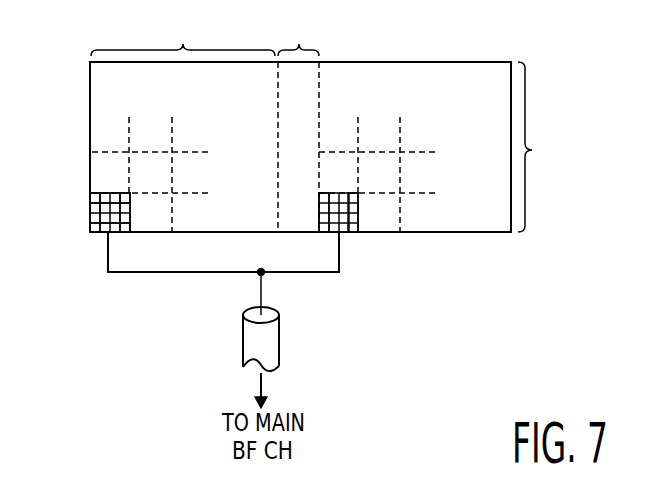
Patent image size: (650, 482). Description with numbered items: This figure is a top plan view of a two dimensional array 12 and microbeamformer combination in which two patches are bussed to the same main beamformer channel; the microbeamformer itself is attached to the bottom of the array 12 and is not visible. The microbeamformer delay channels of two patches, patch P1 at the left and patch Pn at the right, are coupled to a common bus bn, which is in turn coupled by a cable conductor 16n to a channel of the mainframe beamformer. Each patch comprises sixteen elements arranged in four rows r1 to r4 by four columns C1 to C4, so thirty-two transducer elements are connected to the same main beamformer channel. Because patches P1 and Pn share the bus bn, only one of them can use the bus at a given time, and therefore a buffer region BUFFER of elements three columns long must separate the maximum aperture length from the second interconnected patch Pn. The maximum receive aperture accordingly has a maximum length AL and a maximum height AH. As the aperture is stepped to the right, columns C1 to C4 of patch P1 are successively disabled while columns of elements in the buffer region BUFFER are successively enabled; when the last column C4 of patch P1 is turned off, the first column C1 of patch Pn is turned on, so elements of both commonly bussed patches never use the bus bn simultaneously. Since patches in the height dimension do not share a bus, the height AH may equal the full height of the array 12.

The two dimensional array 12 is at (438, 70).
The cable conductor 16n is at (279, 340).
The common bus bn is at (183, 273).
The patch P1 is at (92, 198).
The patch Pn is at (352, 200).
The row r1 is at (88, 208).
The row r4 is at (88, 227).
The column C1 is at (98, 237).
The column C4 is at (122, 236).
The maximum aperture length AL is at (183, 33).
The maximum aperture height AH is at (543, 147).
The buffer region BUFFER is at (298, 35).